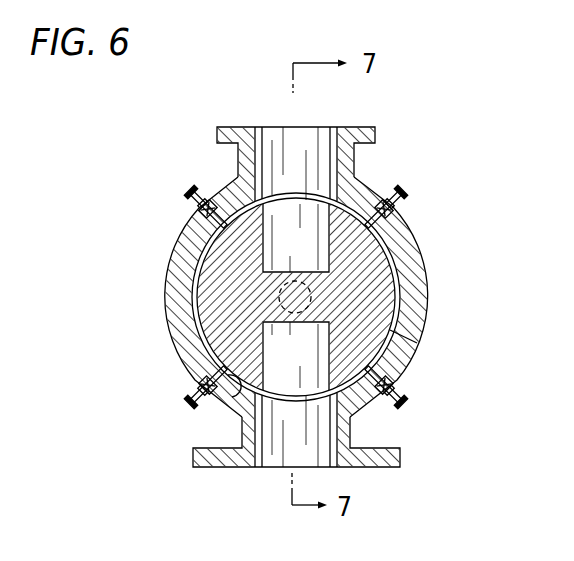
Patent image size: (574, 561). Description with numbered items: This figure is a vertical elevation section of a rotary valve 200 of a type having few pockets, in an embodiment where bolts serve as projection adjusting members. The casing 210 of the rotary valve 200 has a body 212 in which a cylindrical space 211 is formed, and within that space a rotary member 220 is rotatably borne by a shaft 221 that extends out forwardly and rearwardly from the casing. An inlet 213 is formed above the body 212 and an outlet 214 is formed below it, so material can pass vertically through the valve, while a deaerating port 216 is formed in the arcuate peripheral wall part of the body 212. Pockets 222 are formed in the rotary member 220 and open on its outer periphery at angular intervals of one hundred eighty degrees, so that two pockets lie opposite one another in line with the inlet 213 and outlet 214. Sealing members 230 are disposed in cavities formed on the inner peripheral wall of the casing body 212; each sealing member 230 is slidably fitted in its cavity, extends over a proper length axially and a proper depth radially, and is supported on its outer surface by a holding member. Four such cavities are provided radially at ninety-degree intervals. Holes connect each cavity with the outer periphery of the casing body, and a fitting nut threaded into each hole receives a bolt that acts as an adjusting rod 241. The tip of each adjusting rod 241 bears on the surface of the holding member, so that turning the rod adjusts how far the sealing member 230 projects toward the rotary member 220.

The rotary valve 200 is at (411, 207).
The casing 210 is at (188, 230).
The cylindrical space 211 is at (398, 263).
The casing body 212 is at (168, 268).
The inlet 213 is at (293, 140).
The outlet 214 is at (283, 453).
The deaerating port 216 is at (422, 340).
The rotary member 220 is at (197, 290).
The shaft 221 is at (279, 297).
The pockets 222 is at (327, 258).
The sealing member 230 is at (232, 398).
The adjusting rod 241 is at (193, 395).